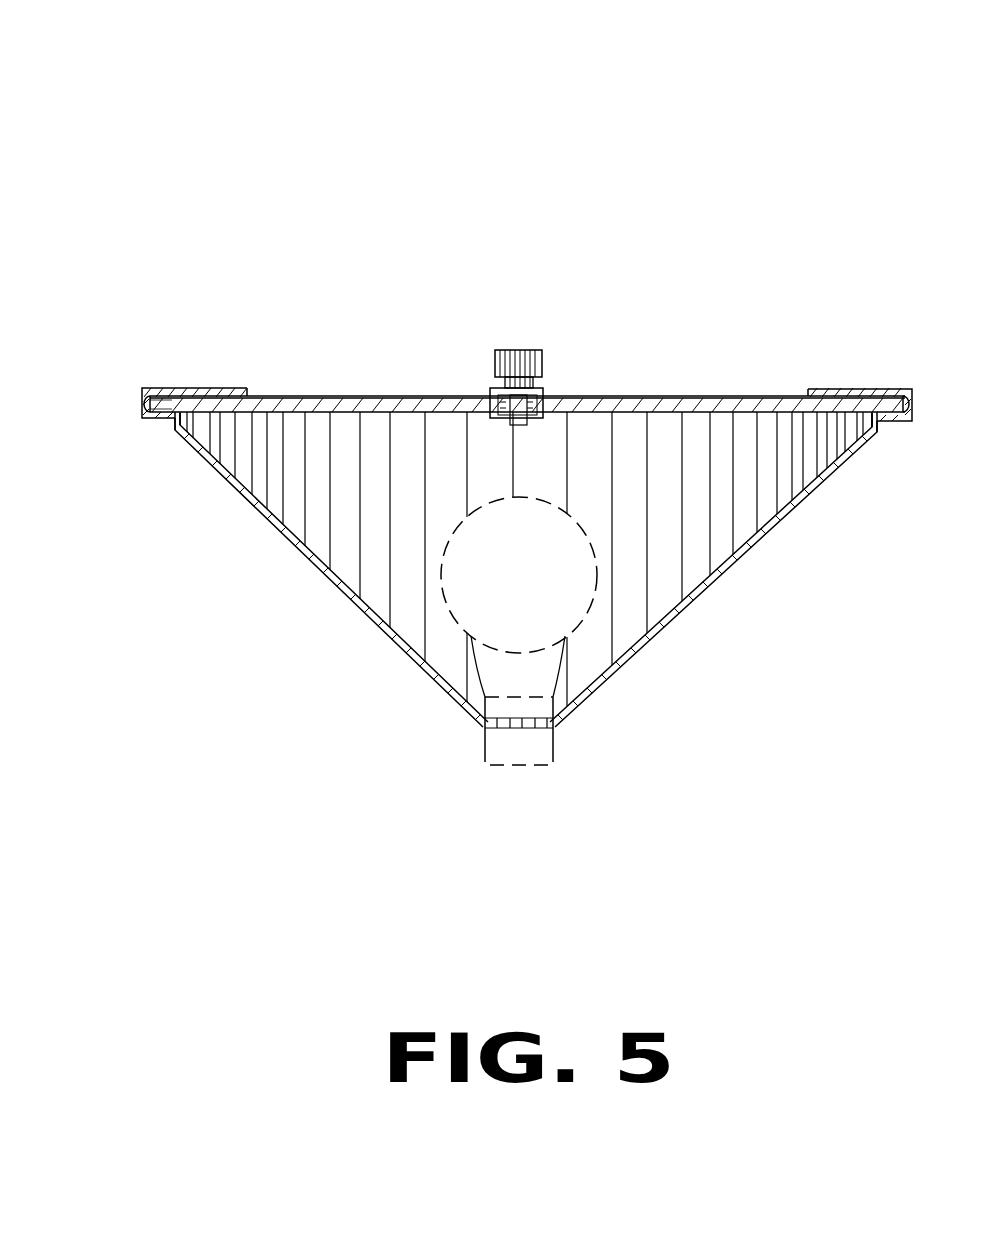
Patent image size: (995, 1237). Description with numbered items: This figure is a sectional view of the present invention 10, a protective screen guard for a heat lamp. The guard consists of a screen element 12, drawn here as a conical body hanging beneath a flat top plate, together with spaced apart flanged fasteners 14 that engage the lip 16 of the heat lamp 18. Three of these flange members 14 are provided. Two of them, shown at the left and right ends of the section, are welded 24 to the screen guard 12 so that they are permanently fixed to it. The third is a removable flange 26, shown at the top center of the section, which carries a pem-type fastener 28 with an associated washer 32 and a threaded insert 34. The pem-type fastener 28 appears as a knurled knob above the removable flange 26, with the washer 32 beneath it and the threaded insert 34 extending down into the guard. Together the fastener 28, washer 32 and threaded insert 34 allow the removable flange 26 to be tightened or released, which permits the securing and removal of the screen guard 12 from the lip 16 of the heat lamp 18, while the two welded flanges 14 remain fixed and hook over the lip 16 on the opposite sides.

The present invention 10 is at (682, 197).
The screen element 12 is at (362, 395).
The flanged fasteners 14 is at (186, 392).
The lip 16 is at (178, 403).
The heat lamp 18 is at (648, 635).
The weld 24 is at (197, 395).
The removable flange 26 is at (543, 393).
The pem-type fastener 28 is at (518, 350).
The washer 32 is at (542, 387).
The threaded insert 34 is at (498, 425).